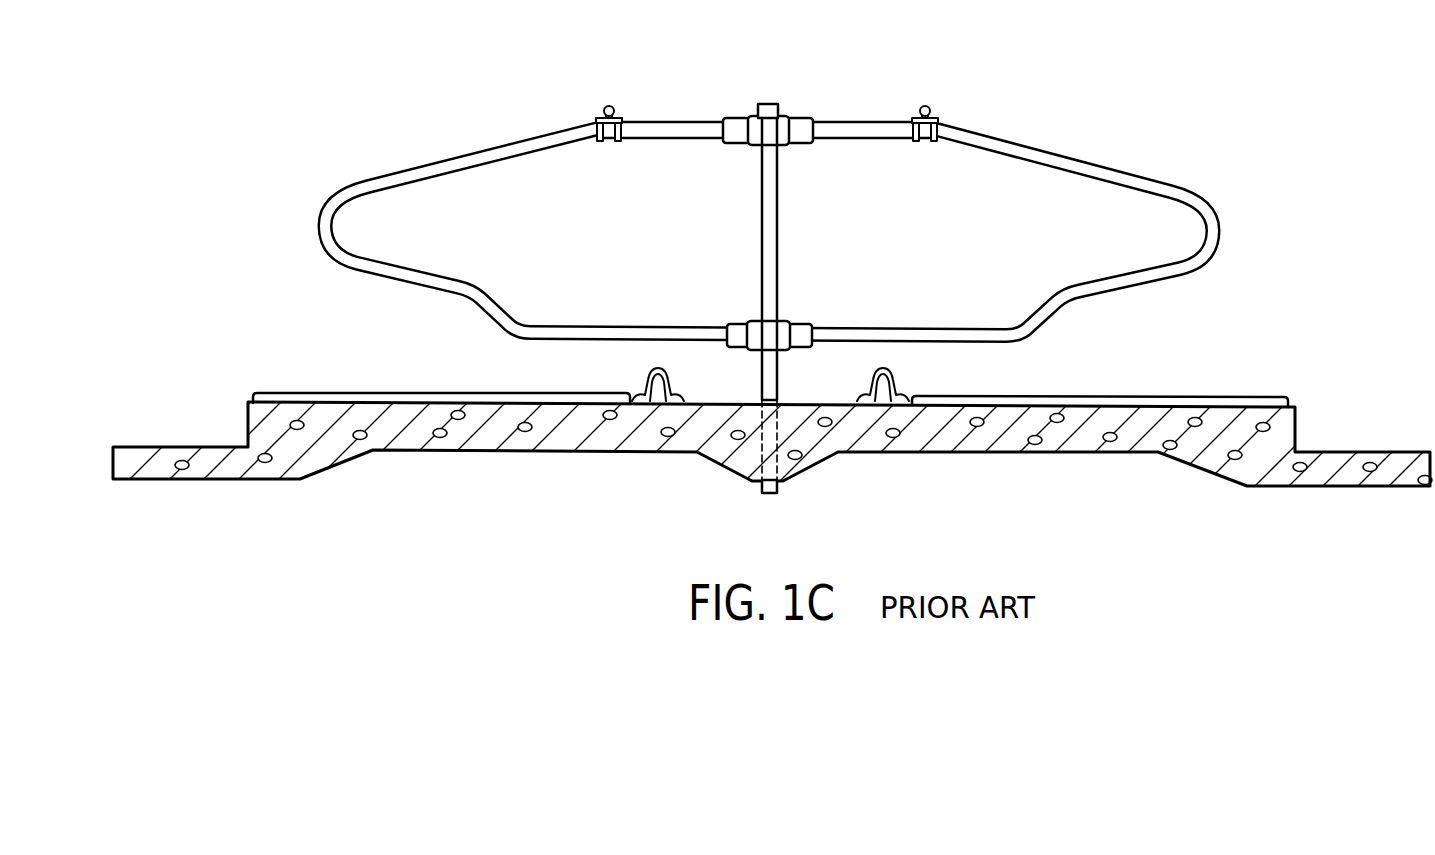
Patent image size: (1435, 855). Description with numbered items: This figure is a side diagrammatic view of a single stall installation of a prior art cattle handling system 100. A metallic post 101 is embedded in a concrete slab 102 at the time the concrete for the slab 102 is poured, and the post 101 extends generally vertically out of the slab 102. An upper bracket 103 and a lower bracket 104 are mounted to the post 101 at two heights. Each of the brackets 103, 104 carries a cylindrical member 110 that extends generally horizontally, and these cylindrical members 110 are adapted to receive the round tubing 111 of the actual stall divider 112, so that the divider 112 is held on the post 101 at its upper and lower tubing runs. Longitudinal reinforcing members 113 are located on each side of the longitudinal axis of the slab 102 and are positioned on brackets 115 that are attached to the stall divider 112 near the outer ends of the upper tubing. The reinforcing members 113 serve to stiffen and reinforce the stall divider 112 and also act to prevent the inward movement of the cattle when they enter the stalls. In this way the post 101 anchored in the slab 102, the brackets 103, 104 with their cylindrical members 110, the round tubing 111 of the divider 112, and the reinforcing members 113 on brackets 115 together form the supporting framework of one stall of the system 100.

The cattle handling system 100 is at (1162, 127).
The metallic post 101 is at (777, 223).
The concrete slab 102 is at (813, 463).
The upper bracket 103 is at (795, 117).
The lower bracket 104 is at (793, 322).
The cylindrical member 110 is at (745, 117).
The round tubing 111 is at (657, 121).
The stall divider 112 is at (1020, 126).
The longitudinal reinforcing member 113 is at (607, 104).
The bracket 115 is at (622, 130).